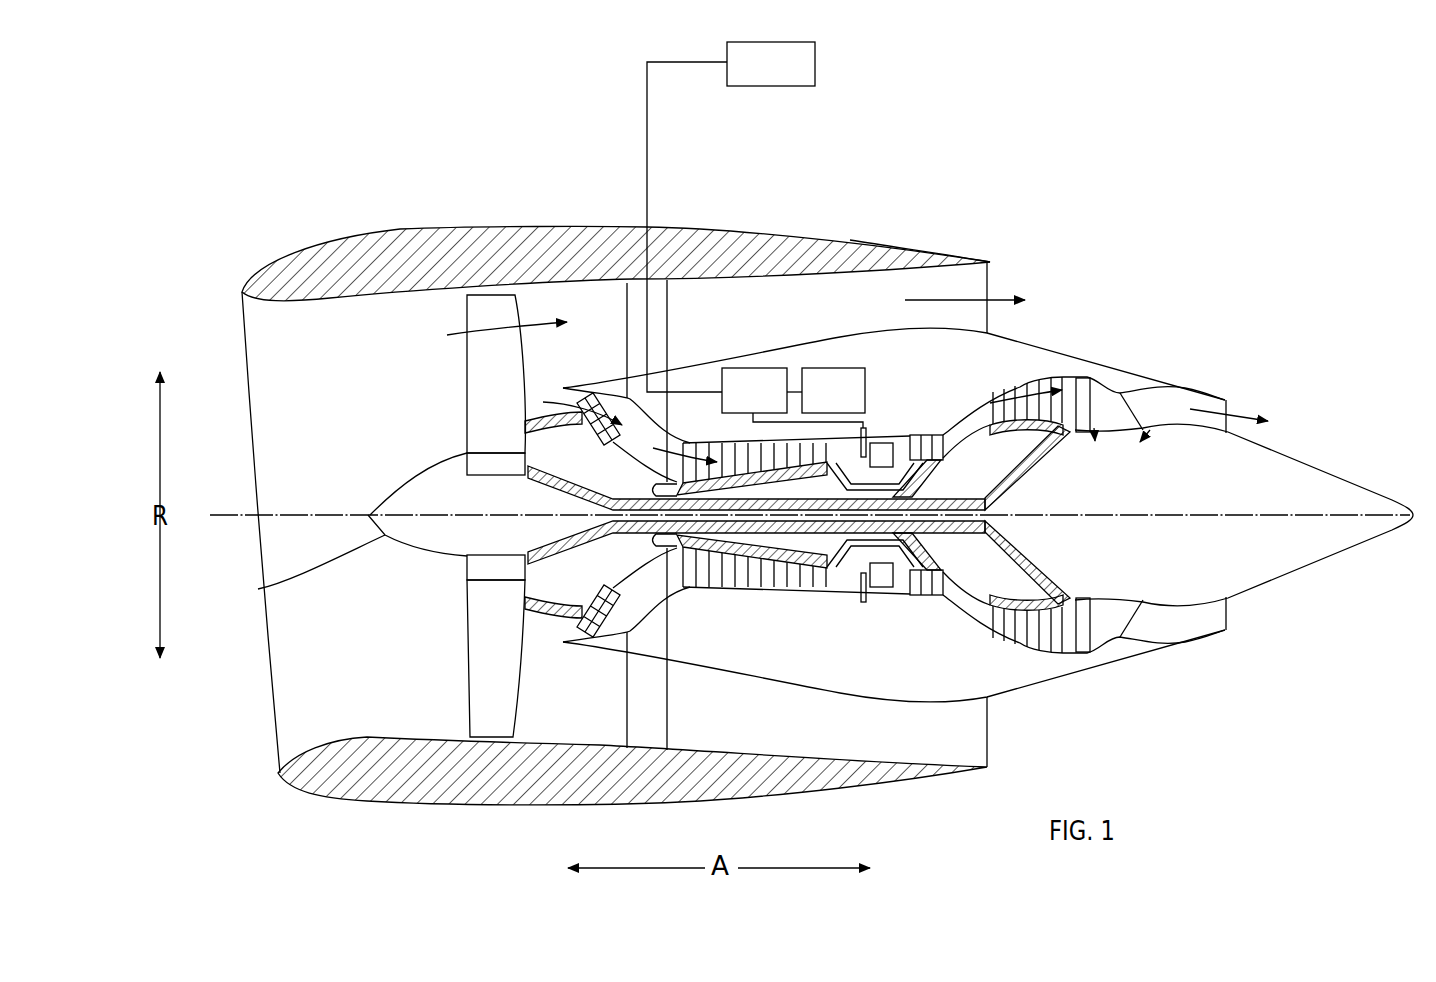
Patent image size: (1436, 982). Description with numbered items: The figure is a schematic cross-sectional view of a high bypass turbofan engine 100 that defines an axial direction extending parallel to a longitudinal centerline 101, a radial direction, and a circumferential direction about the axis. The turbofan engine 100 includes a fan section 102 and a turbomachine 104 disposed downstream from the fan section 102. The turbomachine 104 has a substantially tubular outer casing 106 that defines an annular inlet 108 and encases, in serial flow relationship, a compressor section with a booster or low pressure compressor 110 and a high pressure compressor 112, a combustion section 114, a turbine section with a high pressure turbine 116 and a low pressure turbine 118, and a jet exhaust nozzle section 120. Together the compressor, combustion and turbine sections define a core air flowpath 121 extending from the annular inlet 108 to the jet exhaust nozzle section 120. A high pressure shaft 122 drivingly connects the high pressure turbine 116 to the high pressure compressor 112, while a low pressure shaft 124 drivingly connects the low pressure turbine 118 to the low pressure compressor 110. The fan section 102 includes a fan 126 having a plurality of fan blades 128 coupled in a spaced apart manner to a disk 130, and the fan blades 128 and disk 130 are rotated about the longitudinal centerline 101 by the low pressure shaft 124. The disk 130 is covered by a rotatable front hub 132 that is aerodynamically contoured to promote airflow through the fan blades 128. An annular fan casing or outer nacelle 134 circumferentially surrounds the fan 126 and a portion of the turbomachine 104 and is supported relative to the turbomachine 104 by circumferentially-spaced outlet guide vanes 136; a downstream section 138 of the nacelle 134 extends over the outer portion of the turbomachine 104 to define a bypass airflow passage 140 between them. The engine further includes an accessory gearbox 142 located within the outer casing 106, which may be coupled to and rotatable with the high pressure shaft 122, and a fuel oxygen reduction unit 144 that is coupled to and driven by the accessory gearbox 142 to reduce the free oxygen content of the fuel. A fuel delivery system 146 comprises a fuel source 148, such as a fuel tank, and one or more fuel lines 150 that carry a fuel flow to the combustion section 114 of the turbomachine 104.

The turbofan engine 100 is at (1138, 235).
The longitudinal centerline 101 is at (1195, 510).
The fan section 102 is at (420, 307).
The turbomachine 104 is at (783, 320).
The outer casing 106 is at (841, 695).
The annular inlet 108 is at (580, 627).
The low pressure compressor 110 is at (606, 648).
The high pressure compressor 112 is at (710, 590).
The combustion section 114 is at (883, 594).
The high pressure turbine 116 is at (948, 591).
The low pressure turbine 118 is at (1073, 652).
The jet exhaust nozzle section 120 is at (1140, 632).
The core air flowpath 121 is at (653, 595).
The high pressure shaft 122 is at (884, 487).
The low pressure shaft 124 is at (939, 498).
The fan 126 is at (405, 383).
The fan blades 128 is at (463, 677).
The disk 130 is at (483, 467).
The front hub 132 is at (258, 589).
The outer nacelle 134 is at (515, 806).
The outlet guide vanes 136 is at (670, 306).
The downstream section 138 is at (906, 256).
The bypass airflow passage 140 is at (845, 313).
The accessory gearbox 142 is at (816, 407).
The fuel oxygen reduction unit 144 is at (737, 407).
The fuel delivery system 146 is at (565, 93).
The fuel source 148 is at (754, 78).
The fuel lines 150 is at (647, 163).